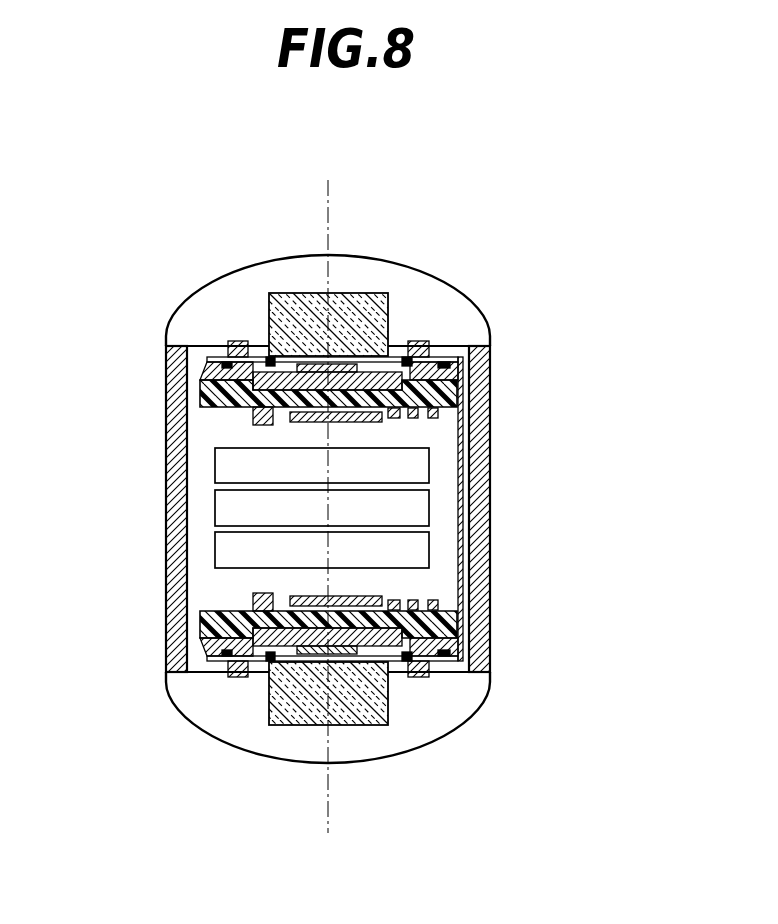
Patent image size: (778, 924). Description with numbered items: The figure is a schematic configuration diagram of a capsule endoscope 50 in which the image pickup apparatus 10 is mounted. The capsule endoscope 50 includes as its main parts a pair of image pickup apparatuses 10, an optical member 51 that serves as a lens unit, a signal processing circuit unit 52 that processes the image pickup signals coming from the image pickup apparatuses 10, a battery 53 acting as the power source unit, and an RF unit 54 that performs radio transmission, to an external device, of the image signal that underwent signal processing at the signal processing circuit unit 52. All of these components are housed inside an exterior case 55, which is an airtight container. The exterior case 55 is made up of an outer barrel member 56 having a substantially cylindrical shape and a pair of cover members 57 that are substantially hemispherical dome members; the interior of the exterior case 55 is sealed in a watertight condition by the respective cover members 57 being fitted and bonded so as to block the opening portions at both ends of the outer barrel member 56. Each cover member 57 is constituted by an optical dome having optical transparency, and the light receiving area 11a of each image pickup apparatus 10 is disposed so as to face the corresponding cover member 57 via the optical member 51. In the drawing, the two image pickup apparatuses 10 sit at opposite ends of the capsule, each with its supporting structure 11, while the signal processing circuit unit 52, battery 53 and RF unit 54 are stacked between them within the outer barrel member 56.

The image pickup apparatus 10 is at (461, 327).
The base member 11 is at (290, 650).
The light receiving area 11a is at (345, 648).
The capsule endoscope 50 is at (329, 510).
The optical member 51 is at (345, 722).
The signal processing circuit unit 52 is at (429, 462).
The battery 53 is at (429, 504).
The RF unit 54 is at (429, 545).
The exterior case 55 is at (248, 495).
The outer barrel member 56 is at (166, 490).
The cover member 57 is at (166, 672).